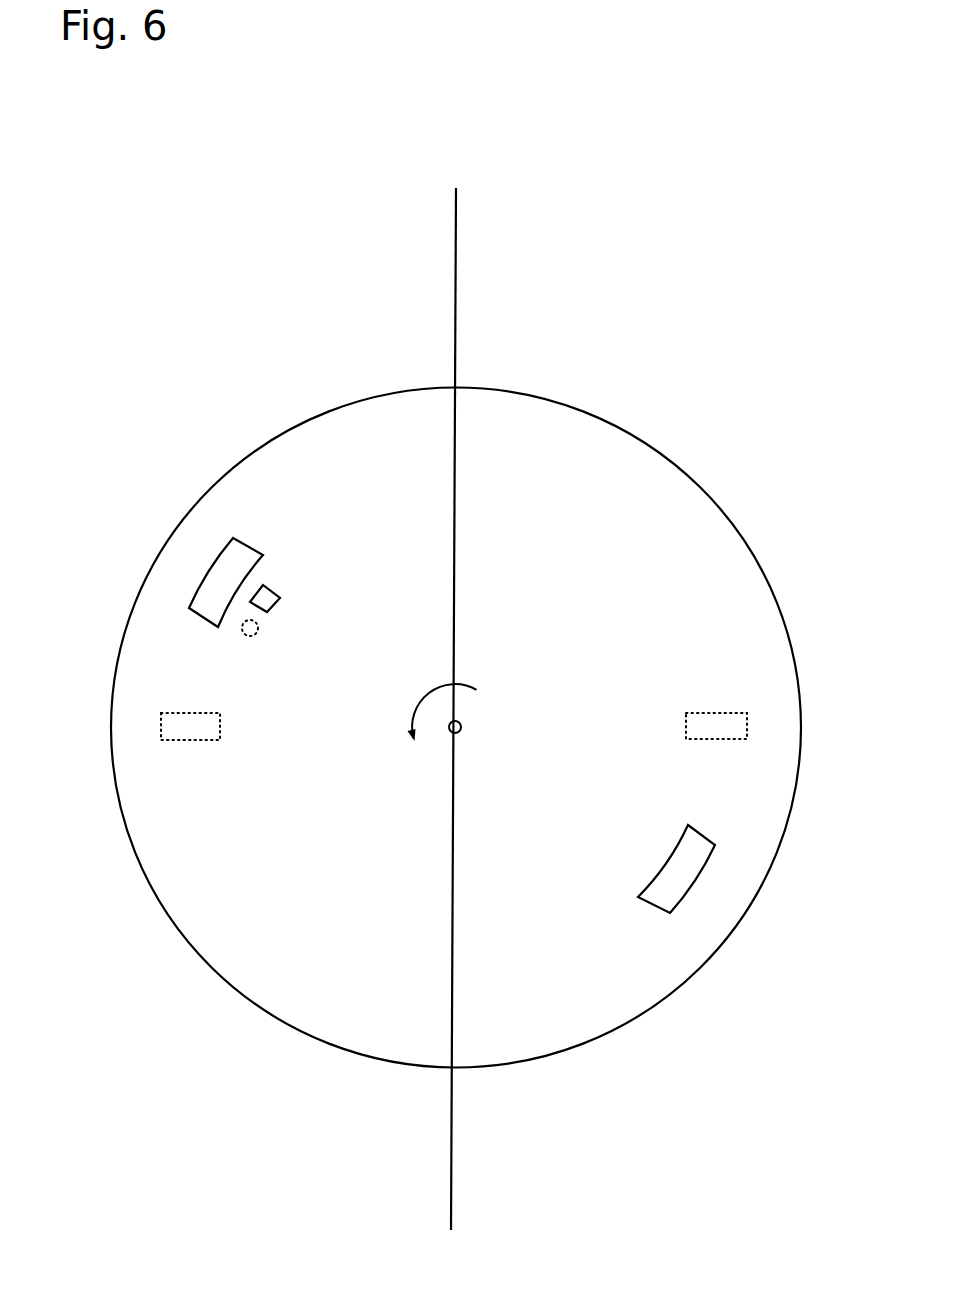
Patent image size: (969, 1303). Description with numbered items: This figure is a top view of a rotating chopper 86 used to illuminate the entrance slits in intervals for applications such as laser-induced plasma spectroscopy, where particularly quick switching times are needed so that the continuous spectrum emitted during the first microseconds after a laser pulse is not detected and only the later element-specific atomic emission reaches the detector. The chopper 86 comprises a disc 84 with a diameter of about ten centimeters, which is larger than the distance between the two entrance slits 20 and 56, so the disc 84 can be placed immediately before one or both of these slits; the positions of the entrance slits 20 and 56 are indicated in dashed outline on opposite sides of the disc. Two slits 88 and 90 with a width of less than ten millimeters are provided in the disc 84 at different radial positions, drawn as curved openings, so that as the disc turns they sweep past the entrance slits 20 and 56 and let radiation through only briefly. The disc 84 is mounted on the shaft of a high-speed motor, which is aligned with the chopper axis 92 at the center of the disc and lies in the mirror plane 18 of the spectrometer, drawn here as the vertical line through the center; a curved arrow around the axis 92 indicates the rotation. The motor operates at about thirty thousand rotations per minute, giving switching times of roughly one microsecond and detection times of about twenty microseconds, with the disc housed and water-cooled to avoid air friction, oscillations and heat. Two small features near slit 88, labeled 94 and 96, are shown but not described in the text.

The mirror plane 18 is at (456, 322).
The entrance slit 20 is at (747, 720).
The entrance slit 56 is at (158, 713).
The disc 84 is at (695, 507).
The rotating chopper 86 is at (302, 303).
The slit 88 is at (217, 565).
The slit 90 is at (705, 845).
The chopper axis 92 is at (458, 720).
The small square element 94 is at (267, 598).
The small dotted circular element 96 is at (248, 632).